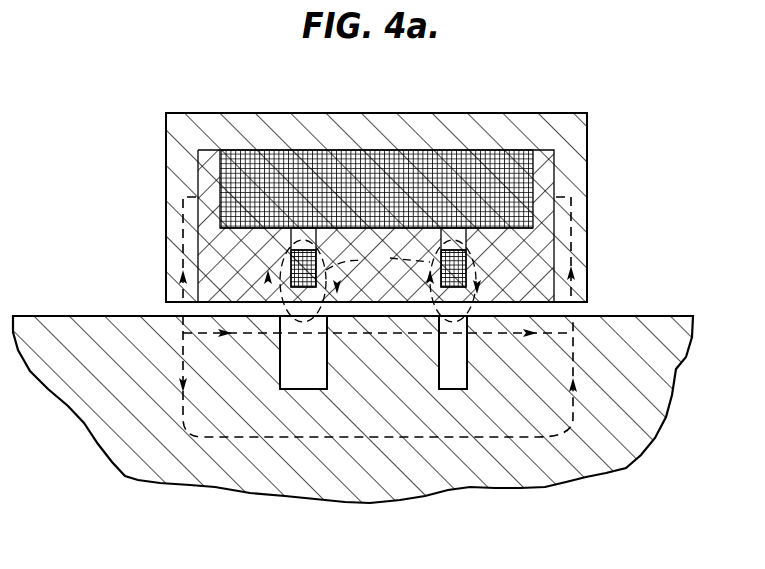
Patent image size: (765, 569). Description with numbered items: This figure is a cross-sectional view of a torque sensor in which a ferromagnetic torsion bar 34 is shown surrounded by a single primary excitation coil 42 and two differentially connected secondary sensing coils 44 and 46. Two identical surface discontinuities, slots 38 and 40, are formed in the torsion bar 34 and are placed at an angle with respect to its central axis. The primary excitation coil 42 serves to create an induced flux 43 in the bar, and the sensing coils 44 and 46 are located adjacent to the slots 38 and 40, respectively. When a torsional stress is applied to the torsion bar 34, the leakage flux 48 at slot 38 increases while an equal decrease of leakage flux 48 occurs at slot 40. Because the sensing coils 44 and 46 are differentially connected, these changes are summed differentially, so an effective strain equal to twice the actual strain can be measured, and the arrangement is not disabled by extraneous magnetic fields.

The ferromagnetic torsion bar 34 is at (655, 318).
The slot 38 is at (314, 369).
The slot 40 is at (465, 369).
The primary excitation coil 42 is at (424, 160).
The induced flux 43 is at (537, 436).
The sensing coil 44 is at (291, 243).
The sensing coil 46 is at (540, 214).
The leakage flux 48 is at (378, 265).